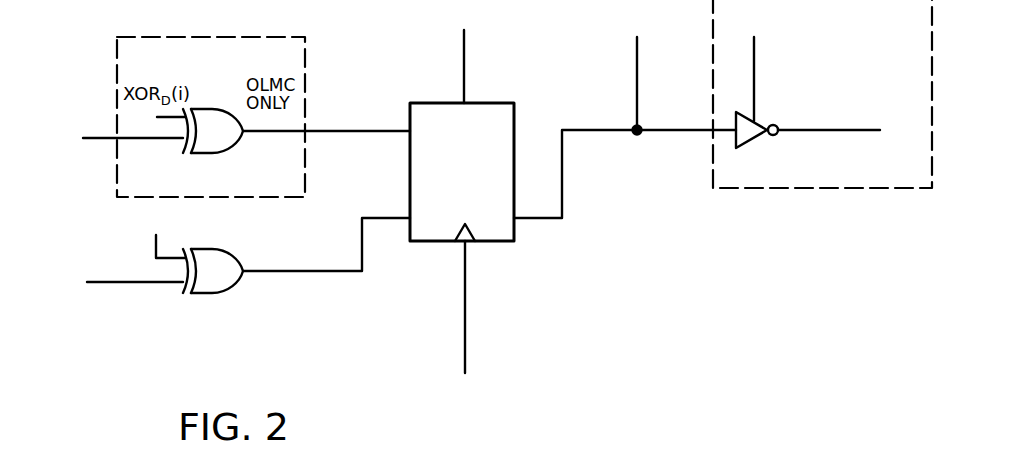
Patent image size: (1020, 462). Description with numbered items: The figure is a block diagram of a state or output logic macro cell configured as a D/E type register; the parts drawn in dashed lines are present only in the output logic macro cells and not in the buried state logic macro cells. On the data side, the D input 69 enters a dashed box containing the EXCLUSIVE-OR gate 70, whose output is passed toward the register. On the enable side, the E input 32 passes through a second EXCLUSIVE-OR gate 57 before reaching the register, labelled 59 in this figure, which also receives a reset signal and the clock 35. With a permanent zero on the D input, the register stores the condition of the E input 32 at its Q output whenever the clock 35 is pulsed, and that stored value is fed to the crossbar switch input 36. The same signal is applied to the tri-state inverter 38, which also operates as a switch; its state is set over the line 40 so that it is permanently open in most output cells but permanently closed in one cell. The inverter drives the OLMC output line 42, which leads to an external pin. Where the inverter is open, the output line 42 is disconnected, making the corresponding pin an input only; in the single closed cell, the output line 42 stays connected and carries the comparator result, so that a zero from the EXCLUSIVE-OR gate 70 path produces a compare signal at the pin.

The D input 69 is at (98, 138).
The EXCLUSIVE-OR gate 70 is at (222, 146).
The E input 32 is at (113, 284).
The XOR gate XOR_E(i) 57 is at (231, 278).
The flip-flop register 59 is at (503, 135).
The clock 35 is at (465, 327).
The crossbar switch input 36 is at (637, 102).
The tri-state inverter 38 is at (750, 137).
The line 40 is at (754, 93).
The OLMC output line 42 is at (863, 130).